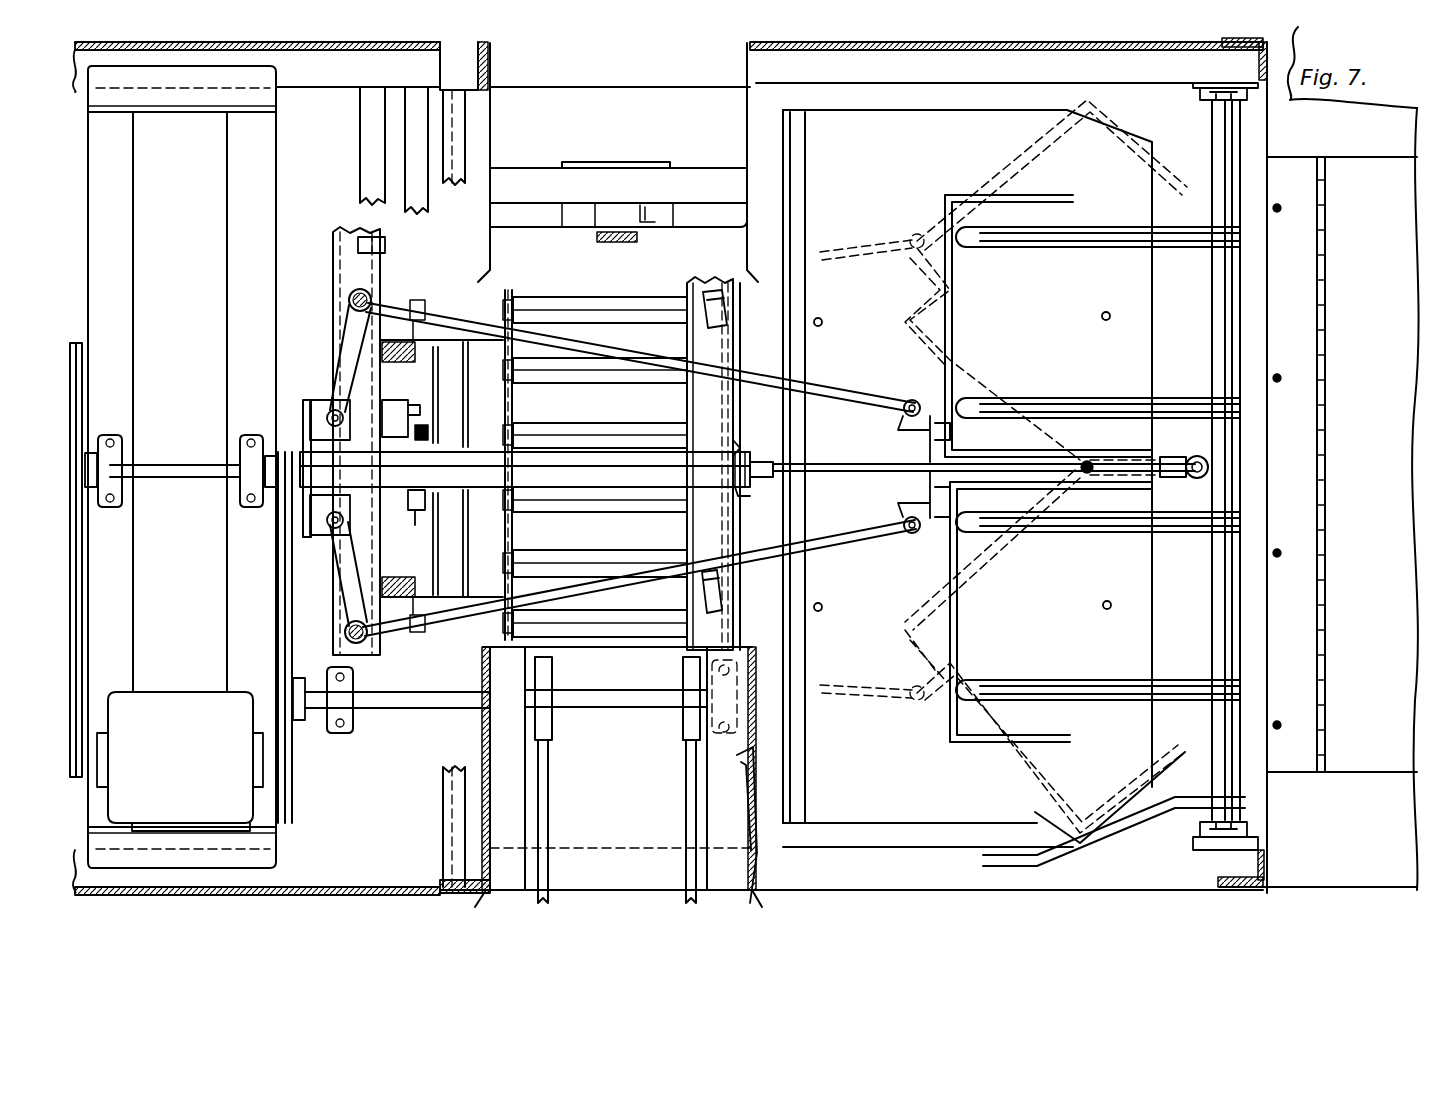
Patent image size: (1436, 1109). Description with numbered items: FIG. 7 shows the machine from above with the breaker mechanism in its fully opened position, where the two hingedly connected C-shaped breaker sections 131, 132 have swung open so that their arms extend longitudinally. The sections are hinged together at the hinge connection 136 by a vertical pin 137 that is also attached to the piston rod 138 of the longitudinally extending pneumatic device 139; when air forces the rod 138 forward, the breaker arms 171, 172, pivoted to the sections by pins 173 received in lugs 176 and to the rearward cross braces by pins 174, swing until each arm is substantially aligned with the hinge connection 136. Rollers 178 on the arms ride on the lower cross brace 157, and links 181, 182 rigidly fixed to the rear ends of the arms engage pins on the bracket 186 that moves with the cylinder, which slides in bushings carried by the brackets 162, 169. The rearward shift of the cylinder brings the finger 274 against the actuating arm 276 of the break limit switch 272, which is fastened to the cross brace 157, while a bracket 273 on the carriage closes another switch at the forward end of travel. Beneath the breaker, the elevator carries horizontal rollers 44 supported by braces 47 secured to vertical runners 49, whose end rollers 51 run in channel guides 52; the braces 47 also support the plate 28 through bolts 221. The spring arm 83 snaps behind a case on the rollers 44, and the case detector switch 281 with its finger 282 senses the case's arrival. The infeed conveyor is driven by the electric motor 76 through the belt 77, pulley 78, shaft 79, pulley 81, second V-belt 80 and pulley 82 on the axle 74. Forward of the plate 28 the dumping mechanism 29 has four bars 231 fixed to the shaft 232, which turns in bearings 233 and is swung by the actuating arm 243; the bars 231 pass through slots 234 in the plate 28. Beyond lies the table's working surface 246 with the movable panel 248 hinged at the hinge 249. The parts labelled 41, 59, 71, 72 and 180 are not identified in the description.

The collecting bin 28 is at (903, 798).
The side frame 29 is at (1250, 793).
The frame housing 41 is at (348, 893).
The roller 44 is at (608, 400).
The vertical plate 47 is at (735, 340).
The link bar 49 is at (413, 292).
The side plate 51 is at (383, 340).
The bracket plate 52 is at (440, 378).
The pivot 59 is at (365, 512).
The guide rod 71 is at (548, 795).
The guide rod 72 is at (688, 795).
The cross bar 74 is at (618, 705).
The motor 76 is at (200, 736).
The guide bar 77 is at (77, 653).
The bracket 78 is at (83, 520).
The drive shaft 79 is at (185, 480).
The plate 80 is at (285, 545).
The coupling 81 is at (272, 492).
The plate 82 is at (293, 783).
The lever 83 is at (757, 778).
The lower guide plate 131 is at (948, 566).
The upper guide plate 132 is at (945, 360).
The eye 136 is at (1210, 464).
The clevis 137 is at (1190, 458).
The connecting rod 138 is at (1118, 462).
The shaft end 139 is at (752, 488).
The support plate 157 is at (340, 270).
The clip 162 is at (742, 446).
The stop 169 is at (428, 500).
The lower roller 171 is at (600, 583).
The phantom link 172 is at (600, 348).
The pivot pin 173 is at (915, 463).
The pivot pin 174 is at (349, 308).
The bracket 176 is at (945, 430).
The bracket 178 is at (728, 305).
The pivot 180 is at (332, 412).
The lower lever 181 is at (430, 548).
The upper lever 182 is at (350, 343).
The mounting plate 186 is at (303, 408).
The screw 221 is at (822, 326).
The post 231 is at (1200, 524).
The post 232 is at (1238, 302).
The nut 233 is at (1228, 95).
The slotted bar 234 is at (1050, 248).
The deflector plate 243 is at (1114, 809).
The side wall 246 is at (1398, 146).
The side wall 248 is at (1398, 440).
The rack 249 is at (1325, 490).
The block 272 is at (395, 402).
The stop block 273 is at (386, 247).
The contact 274 is at (430, 432).
The spring 276 is at (422, 412).
The bar 281 is at (578, 212).
The pad 282 is at (612, 232).